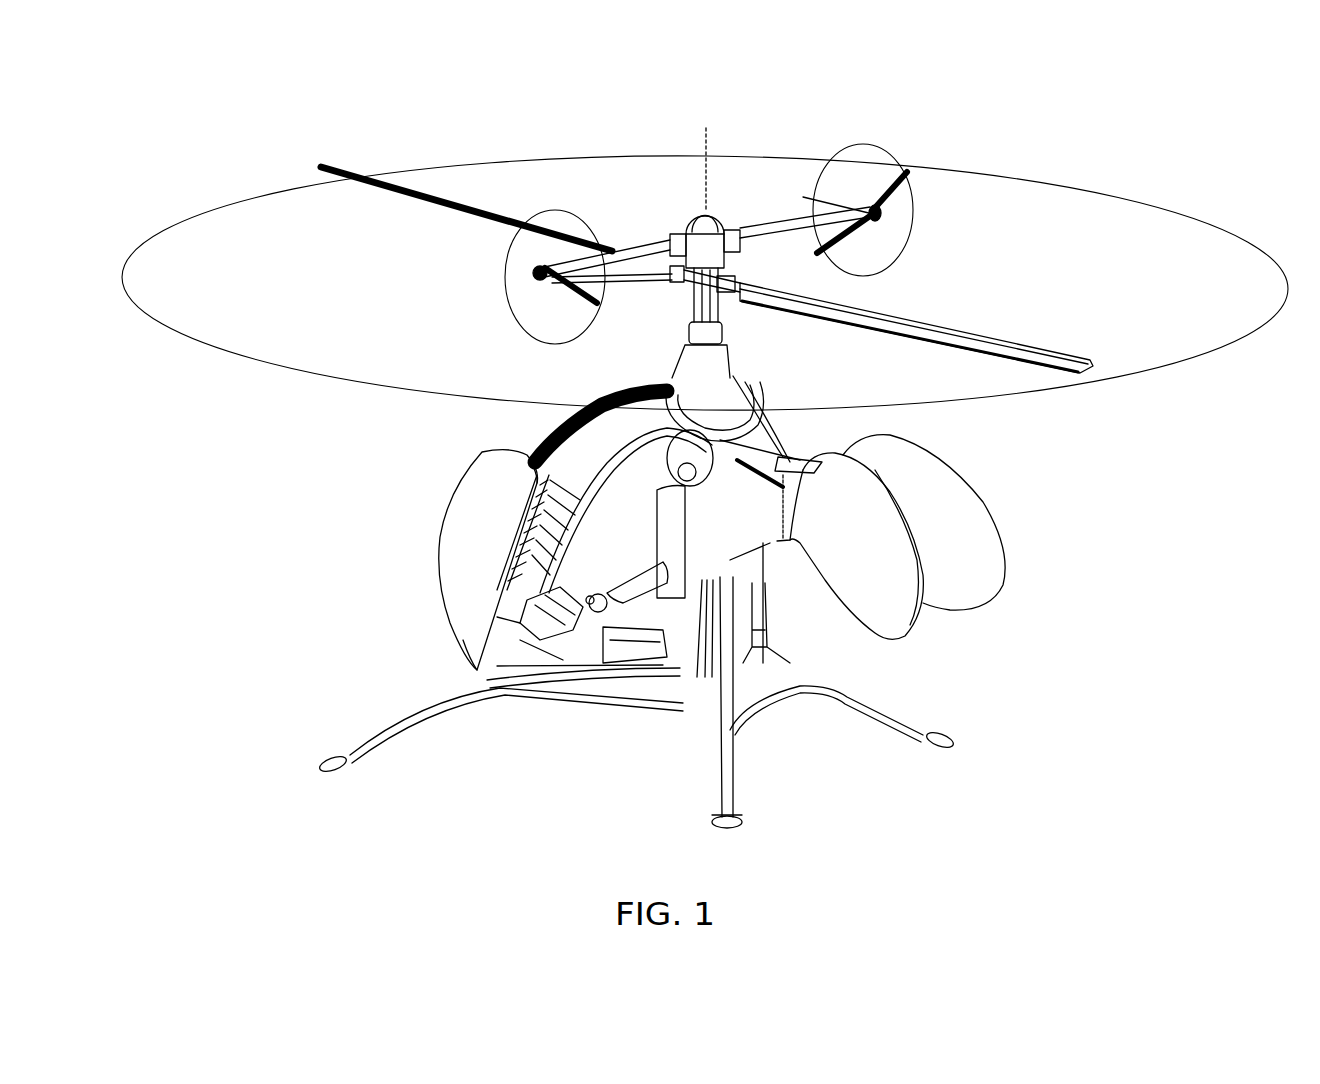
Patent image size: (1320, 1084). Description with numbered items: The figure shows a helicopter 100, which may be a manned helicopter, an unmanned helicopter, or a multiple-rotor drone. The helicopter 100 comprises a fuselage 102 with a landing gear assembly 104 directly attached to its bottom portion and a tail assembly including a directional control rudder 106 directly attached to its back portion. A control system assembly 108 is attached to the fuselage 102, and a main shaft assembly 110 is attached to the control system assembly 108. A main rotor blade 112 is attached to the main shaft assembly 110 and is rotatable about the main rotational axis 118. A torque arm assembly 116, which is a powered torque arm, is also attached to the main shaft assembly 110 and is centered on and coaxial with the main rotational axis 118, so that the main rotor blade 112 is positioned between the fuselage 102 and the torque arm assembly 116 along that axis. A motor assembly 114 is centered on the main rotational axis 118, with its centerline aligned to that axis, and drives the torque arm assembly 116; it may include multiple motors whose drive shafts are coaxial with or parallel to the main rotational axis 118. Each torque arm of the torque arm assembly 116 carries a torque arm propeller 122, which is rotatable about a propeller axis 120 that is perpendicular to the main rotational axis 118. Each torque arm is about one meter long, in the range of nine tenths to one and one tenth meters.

The helicopter 100 is at (245, 150).
The fuselage 102 is at (487, 423).
The landing gear assembly 104 is at (400, 717).
The directional control rudder 106 is at (980, 607).
The control system assembly 108 is at (683, 350).
The main shaft assembly 110 is at (740, 327).
The main rotor blade 112 is at (1093, 364).
The motor assembly 114 is at (693, 213).
The torque arm assembly 116 is at (660, 255).
The main rotational axis 118 is at (795, 120).
The propeller axis 120 is at (880, 218).
The torque arm propeller 122 is at (880, 183).